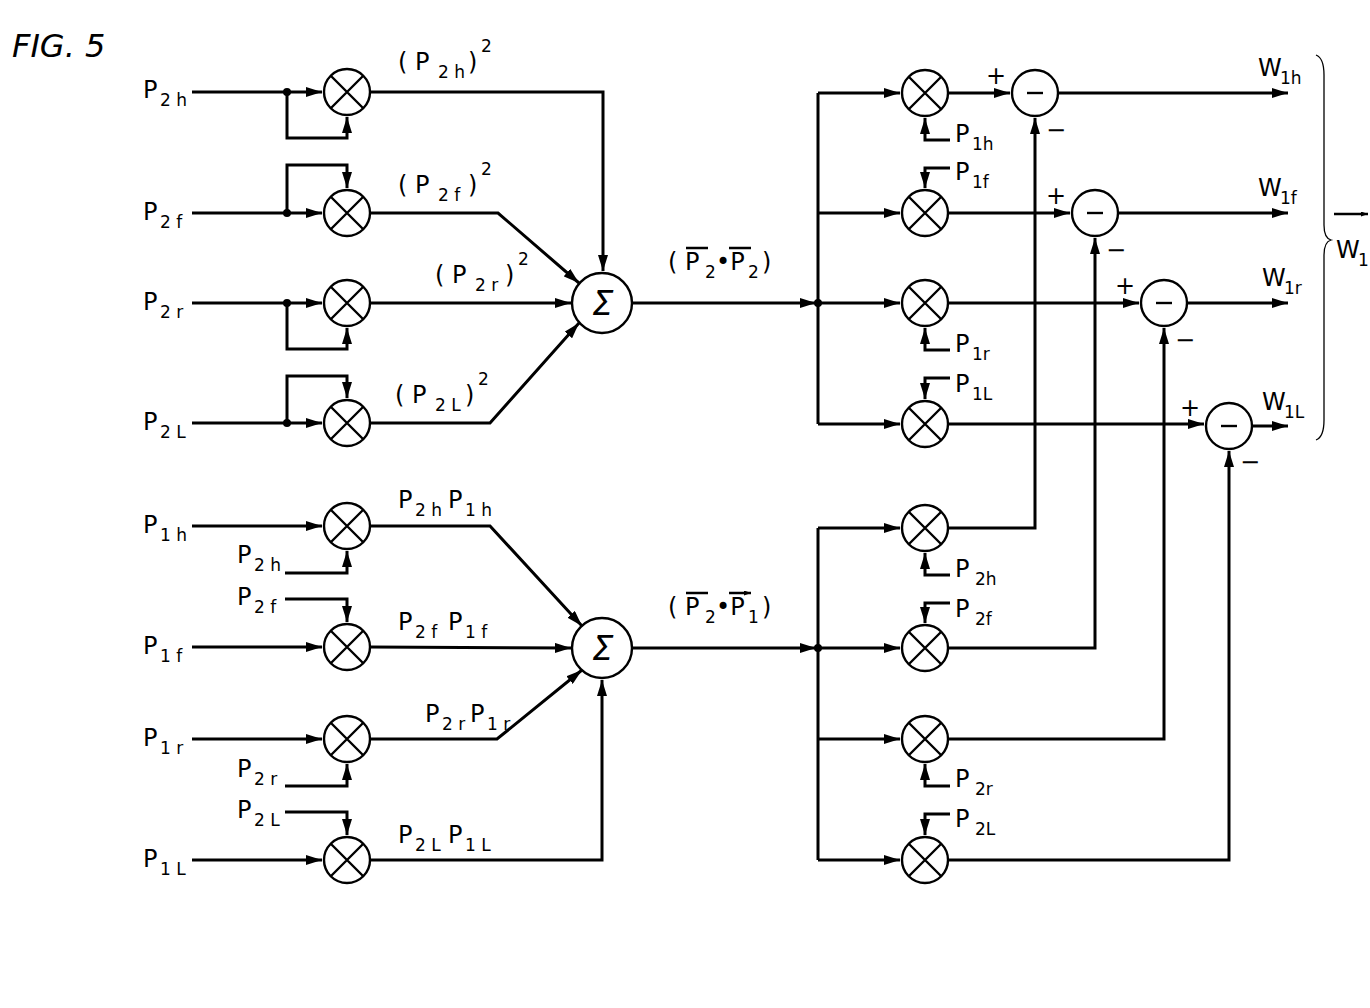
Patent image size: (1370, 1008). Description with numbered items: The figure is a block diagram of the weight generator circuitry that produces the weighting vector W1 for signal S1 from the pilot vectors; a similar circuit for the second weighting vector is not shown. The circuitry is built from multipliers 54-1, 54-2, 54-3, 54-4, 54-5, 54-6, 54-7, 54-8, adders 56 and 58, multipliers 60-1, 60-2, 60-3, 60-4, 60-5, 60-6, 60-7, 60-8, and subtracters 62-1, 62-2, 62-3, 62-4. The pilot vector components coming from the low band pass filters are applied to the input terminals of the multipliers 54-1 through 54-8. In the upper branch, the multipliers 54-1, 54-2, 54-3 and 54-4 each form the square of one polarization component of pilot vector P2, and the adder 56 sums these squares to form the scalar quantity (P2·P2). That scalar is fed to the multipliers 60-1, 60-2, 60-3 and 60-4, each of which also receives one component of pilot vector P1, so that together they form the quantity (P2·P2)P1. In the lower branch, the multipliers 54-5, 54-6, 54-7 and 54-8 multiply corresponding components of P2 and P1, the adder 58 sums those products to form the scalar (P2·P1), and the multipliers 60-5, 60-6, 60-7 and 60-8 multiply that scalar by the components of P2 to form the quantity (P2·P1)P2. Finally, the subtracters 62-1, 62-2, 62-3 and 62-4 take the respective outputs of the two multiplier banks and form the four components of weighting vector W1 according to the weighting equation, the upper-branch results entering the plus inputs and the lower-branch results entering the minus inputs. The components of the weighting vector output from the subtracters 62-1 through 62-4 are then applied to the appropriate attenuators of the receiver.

The multiplier 54-1 is at (332, 78).
The multiplier 54-2 is at (332, 228).
The multiplier 54-3 is at (332, 290).
The multiplier 54-4 is at (332, 438).
The multiplier 54-5 is at (332, 512).
The multiplier 54-6 is at (332, 662).
The multiplier 54-7 is at (334, 726).
The multiplier 54-8 is at (332, 874).
The adder 56 is at (582, 276).
The adder 58 is at (628, 620).
The multiplier 60-1 is at (910, 79).
The multiplier 60-2 is at (910, 228).
The multiplier 60-3 is at (940, 288).
The multiplier 60-4 is at (910, 439).
The multiplier 60-5 is at (910, 514).
The multiplier 60-6 is at (910, 664).
The multiplier 60-7 is at (940, 724).
The multiplier 60-8 is at (910, 874).
The subtracter 62-1 is at (1052, 78).
The subtracter 62-2 is at (1112, 198).
The subtracter 62-3 is at (1164, 280).
The subtracter 62-4 is at (1224, 403).